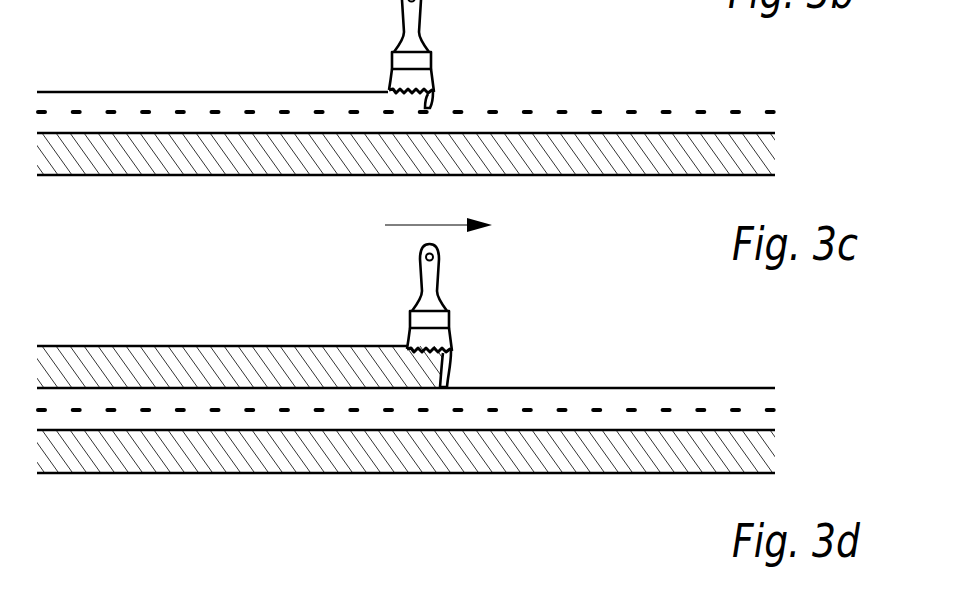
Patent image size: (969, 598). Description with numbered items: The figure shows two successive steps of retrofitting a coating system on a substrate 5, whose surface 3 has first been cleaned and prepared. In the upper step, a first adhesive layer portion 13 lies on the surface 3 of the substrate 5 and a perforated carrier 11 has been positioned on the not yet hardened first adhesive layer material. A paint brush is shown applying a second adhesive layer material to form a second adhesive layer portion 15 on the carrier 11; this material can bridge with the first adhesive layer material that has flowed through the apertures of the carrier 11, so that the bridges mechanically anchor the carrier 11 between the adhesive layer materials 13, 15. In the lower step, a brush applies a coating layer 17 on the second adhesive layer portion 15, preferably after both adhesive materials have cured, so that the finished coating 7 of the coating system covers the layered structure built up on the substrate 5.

In FIG. 3c, the surface 3 is at (746, 128).
In FIG. 3d, the surface 3 is at (746, 426).
In FIG. 3c, the substrate 5 is at (133, 157).
In FIG. 3d, the substrate 5 is at (133, 456).
In FIG. 3d, the coating 7 is at (122, 335).
In FIG. 3c, the carrier 11 is at (560, 112).
In FIG. 3d, the carrier 11 is at (575, 412).
In FIG. 3c, the first adhesive layer portion 13 is at (602, 125).
In FIG. 3d, the first adhesive layer portion 13 is at (618, 422).
In FIG. 3c, the second adhesive layer portion 15 is at (178, 98).
In FIG. 3d, the second adhesive layer portion 15 is at (528, 400).
In FIG. 3d, the coating layer 17 is at (217, 360).